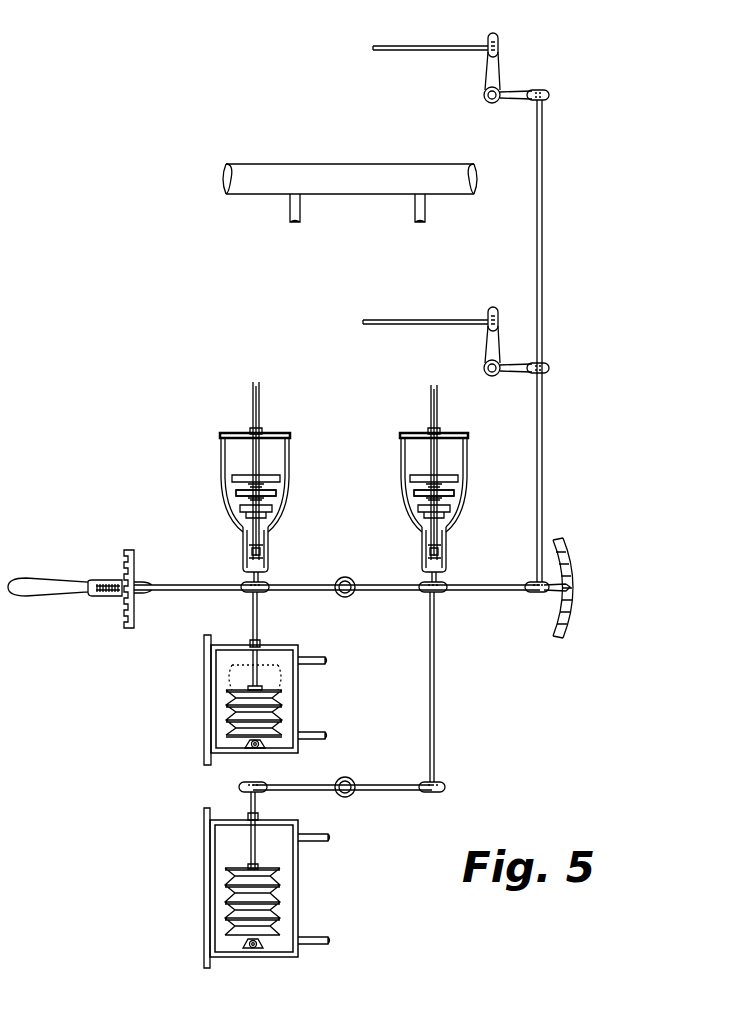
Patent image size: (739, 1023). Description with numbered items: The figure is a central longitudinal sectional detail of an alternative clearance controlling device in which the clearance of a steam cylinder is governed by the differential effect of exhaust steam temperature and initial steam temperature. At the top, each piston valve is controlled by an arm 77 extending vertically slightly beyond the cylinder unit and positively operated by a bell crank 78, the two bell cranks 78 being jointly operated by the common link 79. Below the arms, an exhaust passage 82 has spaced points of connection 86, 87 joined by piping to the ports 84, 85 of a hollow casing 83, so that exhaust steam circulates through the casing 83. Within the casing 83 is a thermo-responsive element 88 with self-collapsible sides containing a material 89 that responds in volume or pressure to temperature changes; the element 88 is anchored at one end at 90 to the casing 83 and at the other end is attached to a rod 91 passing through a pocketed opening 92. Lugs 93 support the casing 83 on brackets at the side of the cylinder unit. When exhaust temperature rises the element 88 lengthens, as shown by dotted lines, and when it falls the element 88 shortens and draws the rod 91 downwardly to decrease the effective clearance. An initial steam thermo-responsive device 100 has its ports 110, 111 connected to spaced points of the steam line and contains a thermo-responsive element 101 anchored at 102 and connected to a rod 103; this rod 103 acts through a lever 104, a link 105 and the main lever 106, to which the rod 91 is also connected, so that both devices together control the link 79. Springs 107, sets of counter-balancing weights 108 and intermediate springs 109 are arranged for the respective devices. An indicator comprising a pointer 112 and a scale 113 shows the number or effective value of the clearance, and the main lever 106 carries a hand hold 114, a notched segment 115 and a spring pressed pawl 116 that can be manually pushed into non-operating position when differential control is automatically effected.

The arm 77 is at (455, 36).
The bell crank 78 is at (500, 78).
The common link 79 is at (543, 250).
The exhaust passage 82 is at (332, 172).
The hollow casing 83 is at (298, 697).
The port 84 is at (324, 658).
The port 85 is at (324, 734).
The point of connection 86 is at (300, 216).
The point of connection 87 is at (425, 214).
The thermo-responsive element 88 is at (236, 736).
The material 89 is at (240, 706).
The anchor 90 is at (250, 752).
The rod 91 is at (258, 612).
The pocketed opening 92 is at (262, 645).
The lug 93 is at (204, 650).
The initial steam thermo-responsive device 100 is at (298, 887).
The thermo-responsive element 101 is at (238, 896).
The anchor 102 is at (251, 952).
The rod 103 is at (250, 845).
The lever 104 is at (385, 780).
The link 105 is at (436, 700).
The main lever 106 is at (388, 582).
The spring 107 is at (268, 556).
The counter-balancing weights 108 is at (422, 478).
The intermediate spring 109 is at (405, 498).
The port 110 is at (330, 837).
The port 111 is at (330, 940).
The pointer 112 is at (548, 592).
The scale 113 is at (570, 604).
The hand hold 114 is at (30, 580).
The notched segment 115 is at (138, 566).
The spring pressed pawl 116 is at (114, 598).